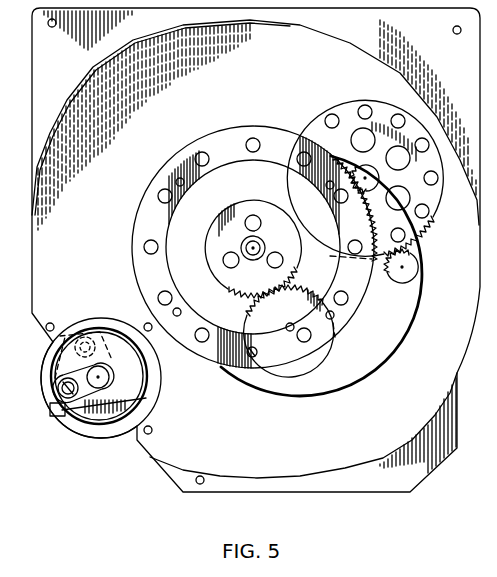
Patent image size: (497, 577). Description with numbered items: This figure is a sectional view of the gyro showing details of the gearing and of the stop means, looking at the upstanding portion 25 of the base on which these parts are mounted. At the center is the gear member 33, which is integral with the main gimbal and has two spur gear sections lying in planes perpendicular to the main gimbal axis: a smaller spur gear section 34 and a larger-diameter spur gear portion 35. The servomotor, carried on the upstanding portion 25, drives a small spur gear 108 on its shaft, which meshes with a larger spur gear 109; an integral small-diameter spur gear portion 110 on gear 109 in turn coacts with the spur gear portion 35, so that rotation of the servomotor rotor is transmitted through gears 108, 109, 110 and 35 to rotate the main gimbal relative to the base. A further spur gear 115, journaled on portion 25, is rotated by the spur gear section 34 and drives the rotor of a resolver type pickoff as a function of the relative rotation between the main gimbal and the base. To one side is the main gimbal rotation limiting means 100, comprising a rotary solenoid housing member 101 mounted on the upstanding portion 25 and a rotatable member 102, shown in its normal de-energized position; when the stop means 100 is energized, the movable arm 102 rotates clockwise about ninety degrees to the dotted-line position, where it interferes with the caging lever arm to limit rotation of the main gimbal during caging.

The upstanding portion 25 is at (246, 109).
The gear member 33 is at (209, 215).
The spur gear section 34 is at (214, 271).
The spur gear portion 35 is at (362, 307).
The main gimbal rotation limiting means 100 is at (170, 383).
The rotary solenoid housing member 101 is at (146, 394).
The rotatable member 102 is at (66, 416).
The small spur gear 108 is at (418, 268).
The spur gear 109 is at (423, 230).
The spur gear portion 110 is at (378, 179).
The further spur gear 115 is at (312, 371).